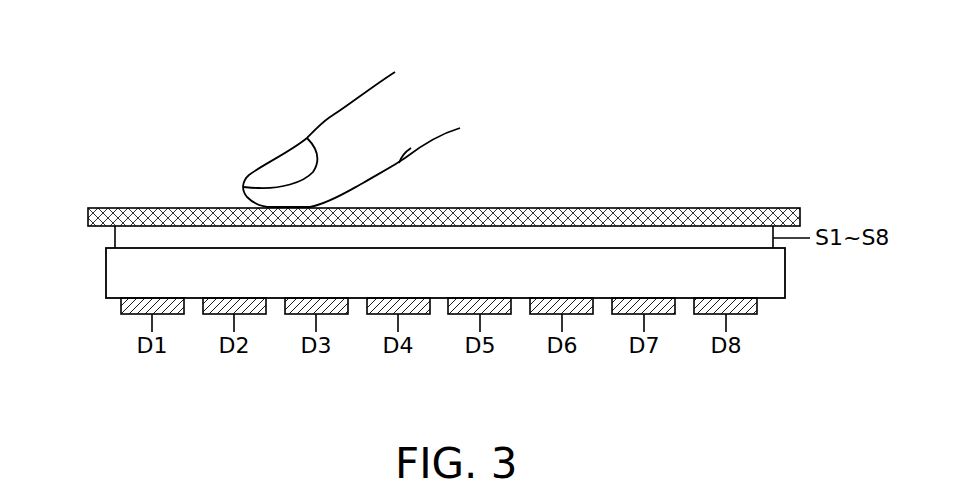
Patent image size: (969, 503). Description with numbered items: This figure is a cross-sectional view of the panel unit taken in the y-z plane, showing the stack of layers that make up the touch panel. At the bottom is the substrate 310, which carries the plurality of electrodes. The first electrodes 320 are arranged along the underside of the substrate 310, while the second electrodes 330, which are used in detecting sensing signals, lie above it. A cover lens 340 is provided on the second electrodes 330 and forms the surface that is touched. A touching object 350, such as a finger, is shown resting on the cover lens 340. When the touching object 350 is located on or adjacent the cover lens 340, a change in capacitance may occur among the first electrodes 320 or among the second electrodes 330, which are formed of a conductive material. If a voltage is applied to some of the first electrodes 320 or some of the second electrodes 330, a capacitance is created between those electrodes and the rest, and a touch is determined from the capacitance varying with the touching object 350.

The substrate 310 is at (112, 269).
The first electrodes 320 is at (122, 313).
The second electrodes 330 is at (123, 233).
The cover lens 340 is at (578, 212).
The touching object 350 is at (358, 122).